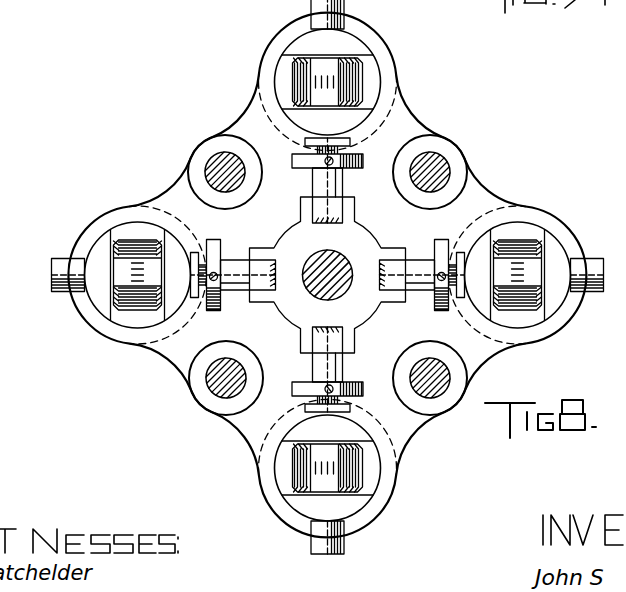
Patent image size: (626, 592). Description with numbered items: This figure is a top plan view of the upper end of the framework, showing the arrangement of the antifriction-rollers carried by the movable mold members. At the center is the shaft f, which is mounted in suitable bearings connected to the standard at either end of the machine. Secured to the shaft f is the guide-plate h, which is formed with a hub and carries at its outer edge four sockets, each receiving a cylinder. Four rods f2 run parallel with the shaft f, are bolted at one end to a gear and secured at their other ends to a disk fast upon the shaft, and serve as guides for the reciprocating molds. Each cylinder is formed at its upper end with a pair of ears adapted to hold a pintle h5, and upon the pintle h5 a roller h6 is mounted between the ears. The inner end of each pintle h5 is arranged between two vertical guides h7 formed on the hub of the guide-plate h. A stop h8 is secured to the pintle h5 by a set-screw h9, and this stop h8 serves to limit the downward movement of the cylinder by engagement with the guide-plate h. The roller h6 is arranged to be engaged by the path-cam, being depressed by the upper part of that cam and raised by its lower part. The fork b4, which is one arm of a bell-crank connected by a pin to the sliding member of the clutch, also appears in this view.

The guide-plate h is at (471, 192).
The vertical guides h7 is at (357, 330).
The shaft f is at (313, 290).
The rods f2 is at (443, 433).
The fork b4 is at (340, 122).
The roller h6 is at (262, 522).
The pintle h5 is at (348, 8).
The stop h8 is at (466, 222).
The set-screw h9 is at (210, 275).